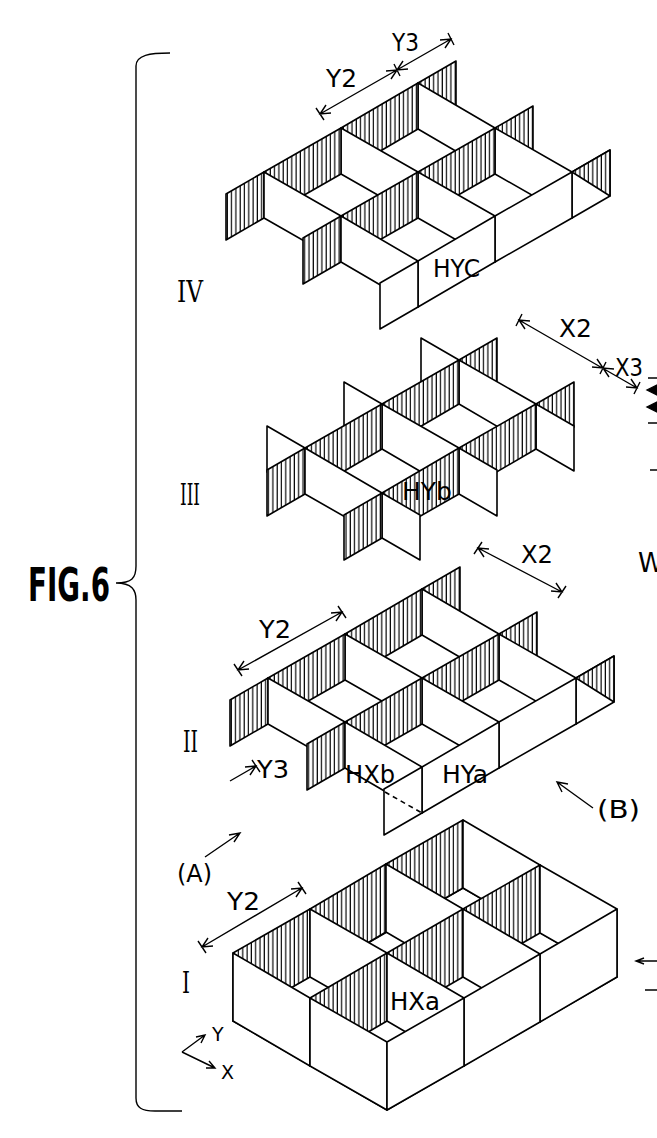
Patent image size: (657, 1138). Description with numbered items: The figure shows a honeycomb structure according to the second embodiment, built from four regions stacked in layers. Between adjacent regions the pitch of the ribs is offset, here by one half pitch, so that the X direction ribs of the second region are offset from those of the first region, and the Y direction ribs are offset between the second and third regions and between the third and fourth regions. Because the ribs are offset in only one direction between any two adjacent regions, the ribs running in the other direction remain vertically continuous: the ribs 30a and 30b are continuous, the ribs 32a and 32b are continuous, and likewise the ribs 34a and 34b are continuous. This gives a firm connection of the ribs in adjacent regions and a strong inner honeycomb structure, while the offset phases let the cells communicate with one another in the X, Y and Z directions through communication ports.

The rib 30a is at (597, 921).
The rib 30b is at (568, 730).
The rib 32a is at (560, 668).
The rib 32b is at (553, 462).
The rib 34a is at (398, 445).
The rib 34b is at (286, 232).